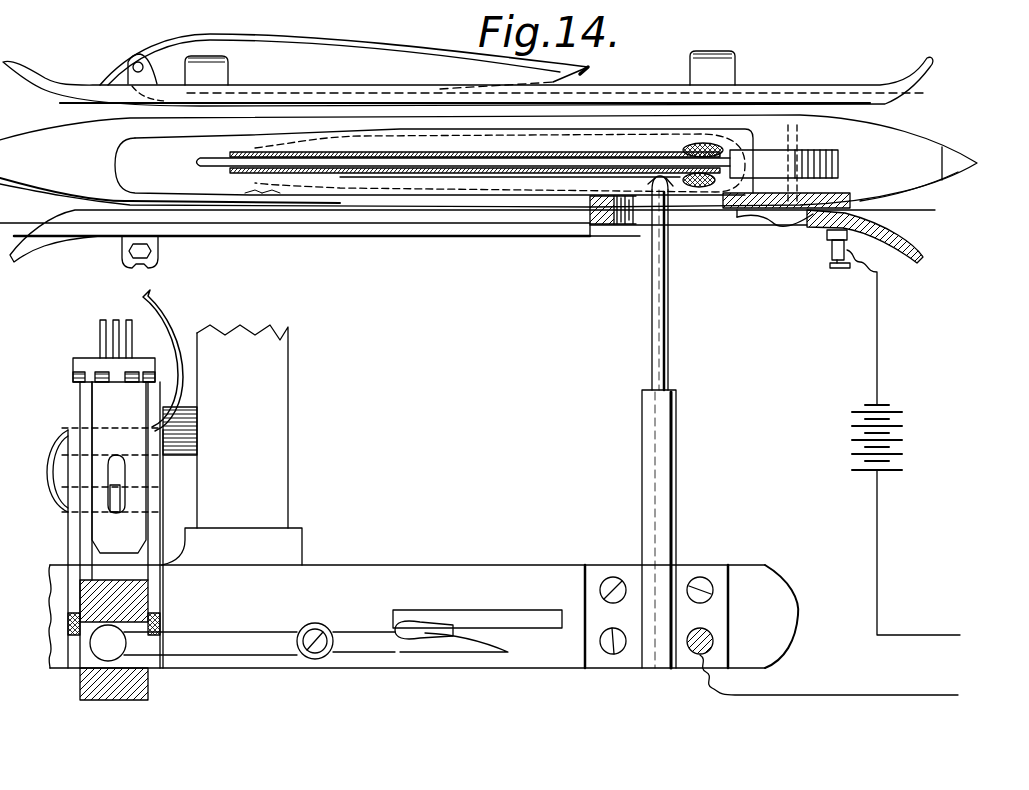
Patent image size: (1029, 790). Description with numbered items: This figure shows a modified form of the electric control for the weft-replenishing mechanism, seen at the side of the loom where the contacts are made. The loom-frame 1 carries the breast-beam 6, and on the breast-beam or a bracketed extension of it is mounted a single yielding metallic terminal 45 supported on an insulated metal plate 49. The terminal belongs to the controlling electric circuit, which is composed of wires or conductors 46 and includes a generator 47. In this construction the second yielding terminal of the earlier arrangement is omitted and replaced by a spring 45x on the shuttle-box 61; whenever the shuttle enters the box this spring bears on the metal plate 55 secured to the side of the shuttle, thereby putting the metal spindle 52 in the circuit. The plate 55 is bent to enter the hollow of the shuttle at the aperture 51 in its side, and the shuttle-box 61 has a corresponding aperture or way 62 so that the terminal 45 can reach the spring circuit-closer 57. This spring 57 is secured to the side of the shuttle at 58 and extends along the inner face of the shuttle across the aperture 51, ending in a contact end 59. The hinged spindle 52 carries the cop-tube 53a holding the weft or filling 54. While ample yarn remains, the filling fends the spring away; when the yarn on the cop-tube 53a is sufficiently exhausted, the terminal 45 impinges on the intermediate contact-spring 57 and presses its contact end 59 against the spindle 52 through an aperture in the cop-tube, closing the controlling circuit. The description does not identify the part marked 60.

The loom-frame 1 is at (289, 470).
The breast-beam 6 is at (470, 565).
The metallic terminal 45 is at (650, 340).
The spring on the shuttle-box 45x is at (770, 232).
The wires or conductors 46 is at (830, 472).
The generator 47 is at (852, 438).
The insulated metal plate 49 is at (600, 565).
The aperture in the shuttle 51 is at (635, 206).
The hinged spindle 52 is at (784, 165).
The cop-tube 53a is at (558, 152).
The weft or filling 54 is at (712, 144).
The metal plate 55 is at (736, 220).
The spring circuit-closer 57 is at (513, 210).
The securing point of the spring 58 is at (258, 197).
The contact end of the spring 59 is at (670, 183).
The shell 60 is at (820, 198).
The shuttle-box 61 is at (645, 85).
The aperture or way in the shuttle-box 62 is at (705, 218).